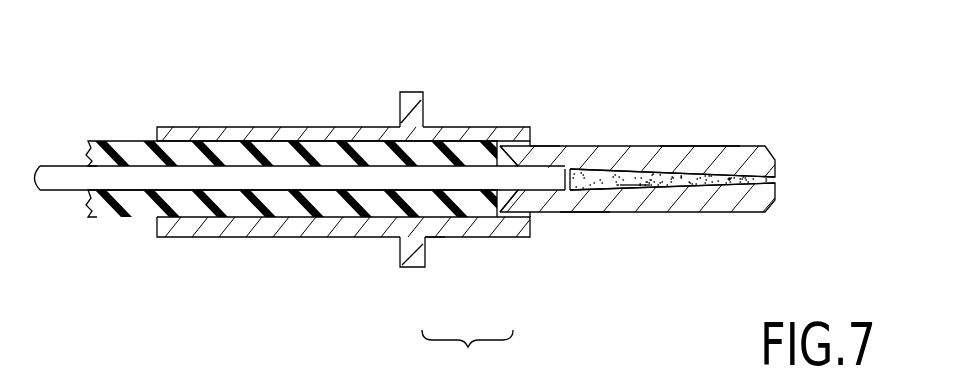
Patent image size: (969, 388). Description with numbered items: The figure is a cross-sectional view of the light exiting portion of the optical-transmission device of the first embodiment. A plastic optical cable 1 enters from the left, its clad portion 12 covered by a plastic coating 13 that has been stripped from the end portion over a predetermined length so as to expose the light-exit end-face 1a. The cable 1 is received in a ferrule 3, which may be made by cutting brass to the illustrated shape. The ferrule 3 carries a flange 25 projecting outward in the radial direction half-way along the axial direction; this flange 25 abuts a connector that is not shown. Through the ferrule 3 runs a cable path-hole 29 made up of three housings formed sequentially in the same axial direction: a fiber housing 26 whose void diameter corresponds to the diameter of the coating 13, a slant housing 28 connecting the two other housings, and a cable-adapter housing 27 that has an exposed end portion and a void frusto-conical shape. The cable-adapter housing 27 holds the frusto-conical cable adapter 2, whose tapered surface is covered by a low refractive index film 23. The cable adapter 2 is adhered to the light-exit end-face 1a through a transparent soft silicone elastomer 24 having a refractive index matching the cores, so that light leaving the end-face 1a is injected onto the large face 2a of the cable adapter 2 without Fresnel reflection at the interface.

The plastic optical cable 1 is at (467, 353).
The light-exit end-face 1a is at (551, 193).
The cable adapter 2 is at (643, 268).
The large face 2a is at (578, 191).
The ferrule 3 is at (312, 133).
The clad portion 12 is at (515, 180).
The coating 13 is at (430, 239).
The low refractive index film 23 is at (634, 185).
The transparent soft silicone elastomer 24 is at (569, 167).
The flange 25 is at (410, 100).
The fiber housing 26 is at (273, 140).
The cable-adapter housing 27 is at (678, 166).
The slant housing 28 is at (502, 143).
The cable path-hole 29 is at (535, 146).